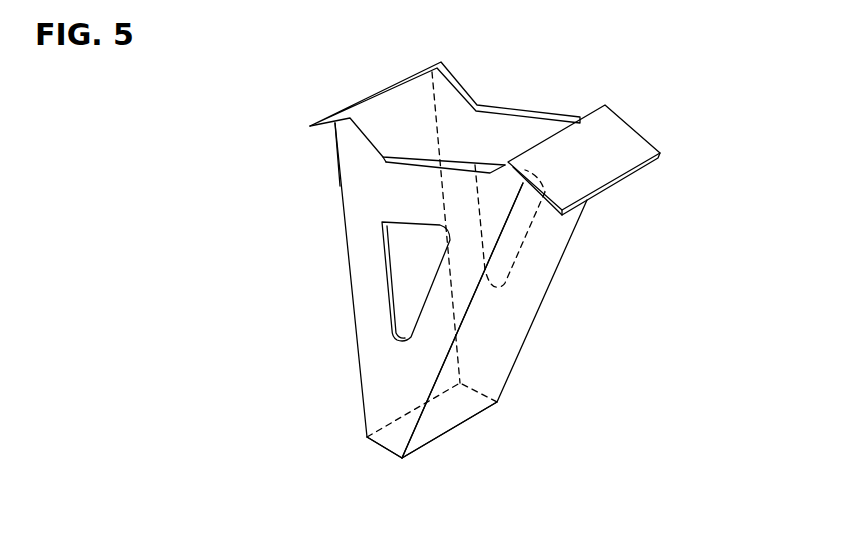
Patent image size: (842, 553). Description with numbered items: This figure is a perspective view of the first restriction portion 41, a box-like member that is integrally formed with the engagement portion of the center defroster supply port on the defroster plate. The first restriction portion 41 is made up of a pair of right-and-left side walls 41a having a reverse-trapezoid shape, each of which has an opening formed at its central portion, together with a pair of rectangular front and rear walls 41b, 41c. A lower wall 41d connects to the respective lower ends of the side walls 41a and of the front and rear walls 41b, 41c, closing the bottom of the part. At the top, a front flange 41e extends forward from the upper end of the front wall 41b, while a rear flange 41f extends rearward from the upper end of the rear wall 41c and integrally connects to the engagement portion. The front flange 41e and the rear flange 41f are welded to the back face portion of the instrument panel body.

The first restriction portion 41 is at (548, 75).
The side wall 41a is at (370, 375).
The front wall 41b is at (348, 178).
The rear wall 41c is at (512, 357).
The lower wall 41d is at (455, 417).
The front flange 41e is at (362, 102).
The rear flange 41f is at (630, 150).